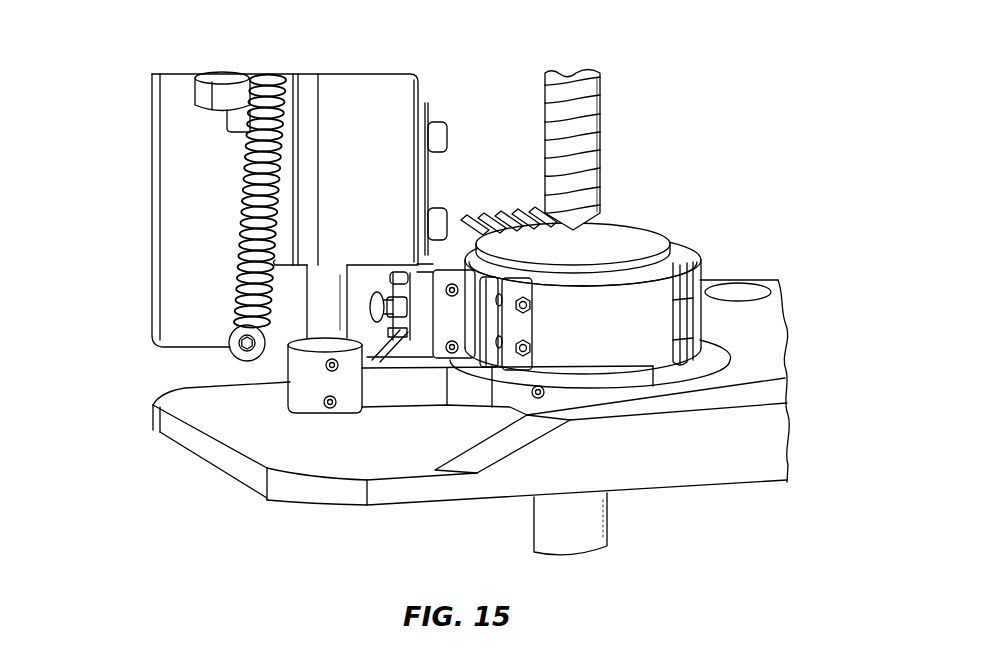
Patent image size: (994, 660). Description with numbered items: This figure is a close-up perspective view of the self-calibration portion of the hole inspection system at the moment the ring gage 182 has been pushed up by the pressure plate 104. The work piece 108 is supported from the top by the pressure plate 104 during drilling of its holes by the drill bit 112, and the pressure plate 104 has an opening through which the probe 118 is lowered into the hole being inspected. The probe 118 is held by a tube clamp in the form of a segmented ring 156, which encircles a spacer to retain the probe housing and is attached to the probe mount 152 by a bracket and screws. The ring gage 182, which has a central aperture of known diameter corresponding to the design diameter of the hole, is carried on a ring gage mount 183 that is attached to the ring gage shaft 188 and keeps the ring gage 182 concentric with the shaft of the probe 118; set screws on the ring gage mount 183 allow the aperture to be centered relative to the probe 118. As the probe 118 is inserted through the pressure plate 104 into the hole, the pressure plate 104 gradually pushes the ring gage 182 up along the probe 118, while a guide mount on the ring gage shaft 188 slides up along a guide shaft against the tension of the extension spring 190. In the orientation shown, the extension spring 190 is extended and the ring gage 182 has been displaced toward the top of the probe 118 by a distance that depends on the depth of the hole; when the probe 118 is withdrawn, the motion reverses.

The pressure plate 104 is at (737, 455).
The work piece 108 is at (212, 540).
The drill bit 112 is at (590, 165).
The probe 118 is at (524, 527).
The probe mount 152 is at (195, 225).
The ring 156 is at (648, 327).
The ring gage 182 is at (778, 378).
The ring gage mount 183 is at (480, 393).
The ring gage shaft 188 is at (327, 302).
The extension spring 190 is at (243, 158).